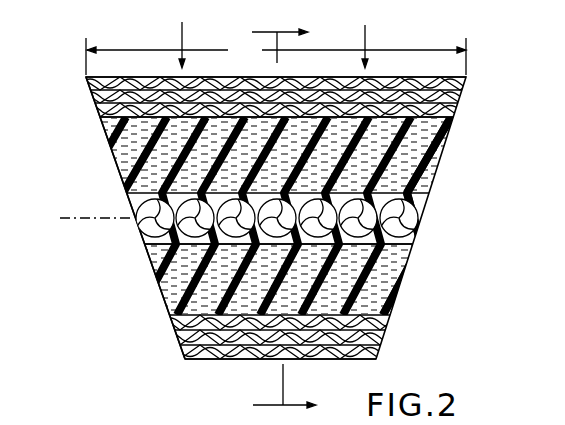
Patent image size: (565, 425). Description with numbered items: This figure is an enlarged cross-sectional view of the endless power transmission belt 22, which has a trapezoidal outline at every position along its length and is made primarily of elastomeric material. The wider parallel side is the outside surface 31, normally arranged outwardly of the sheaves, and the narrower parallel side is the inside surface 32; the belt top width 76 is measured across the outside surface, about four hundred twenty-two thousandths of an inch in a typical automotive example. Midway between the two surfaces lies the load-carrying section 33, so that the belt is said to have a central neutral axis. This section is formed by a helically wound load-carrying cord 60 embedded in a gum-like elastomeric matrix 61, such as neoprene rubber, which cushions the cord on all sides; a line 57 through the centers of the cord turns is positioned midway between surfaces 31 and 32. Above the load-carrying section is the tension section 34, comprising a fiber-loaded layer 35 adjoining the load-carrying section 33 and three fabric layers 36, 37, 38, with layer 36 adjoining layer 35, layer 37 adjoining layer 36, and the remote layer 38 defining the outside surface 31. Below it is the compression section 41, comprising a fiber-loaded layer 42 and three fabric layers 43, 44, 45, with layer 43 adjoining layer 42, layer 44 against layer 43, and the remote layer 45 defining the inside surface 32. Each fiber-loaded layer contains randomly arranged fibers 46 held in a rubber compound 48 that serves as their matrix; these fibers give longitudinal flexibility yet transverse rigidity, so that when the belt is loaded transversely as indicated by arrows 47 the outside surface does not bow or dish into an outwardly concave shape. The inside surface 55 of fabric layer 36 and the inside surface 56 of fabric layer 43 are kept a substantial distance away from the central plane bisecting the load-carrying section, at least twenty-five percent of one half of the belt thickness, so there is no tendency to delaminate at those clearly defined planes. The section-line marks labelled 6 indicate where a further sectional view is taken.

The belt 22 is at (497, 49).
The outside surface 31 is at (143, 77).
The inside surface 32 is at (222, 361).
The load-carrying section 33 is at (452, 210).
The tension section 34 is at (465, 143).
The fiber-loaded layer 35 is at (101, 155).
The fabric layer 36 is at (100, 113).
The fabric layer 37 is at (97, 100).
The fabric layer 38 is at (88, 78).
The compression section 41 is at (420, 280).
The fiber-loaded layer 42 is at (148, 287).
The fabric layer 43 is at (173, 327).
The fabric layer 44 is at (181, 338).
The fabric layer 45 is at (180, 355).
The fibers 46 is at (140, 172).
The arrows 47 is at (182, 28).
The rubber compound 48 is at (122, 178).
The inside surface 55 is at (426, 127).
The inside surface 56 is at (393, 302).
The line 57 is at (82, 218).
The load-carrying cord 60 is at (426, 200).
The elastomeric matrix 61 is at (406, 237).
The belt top width 76 is at (276, 55).
The section line 6- 6 is at (294, 218).